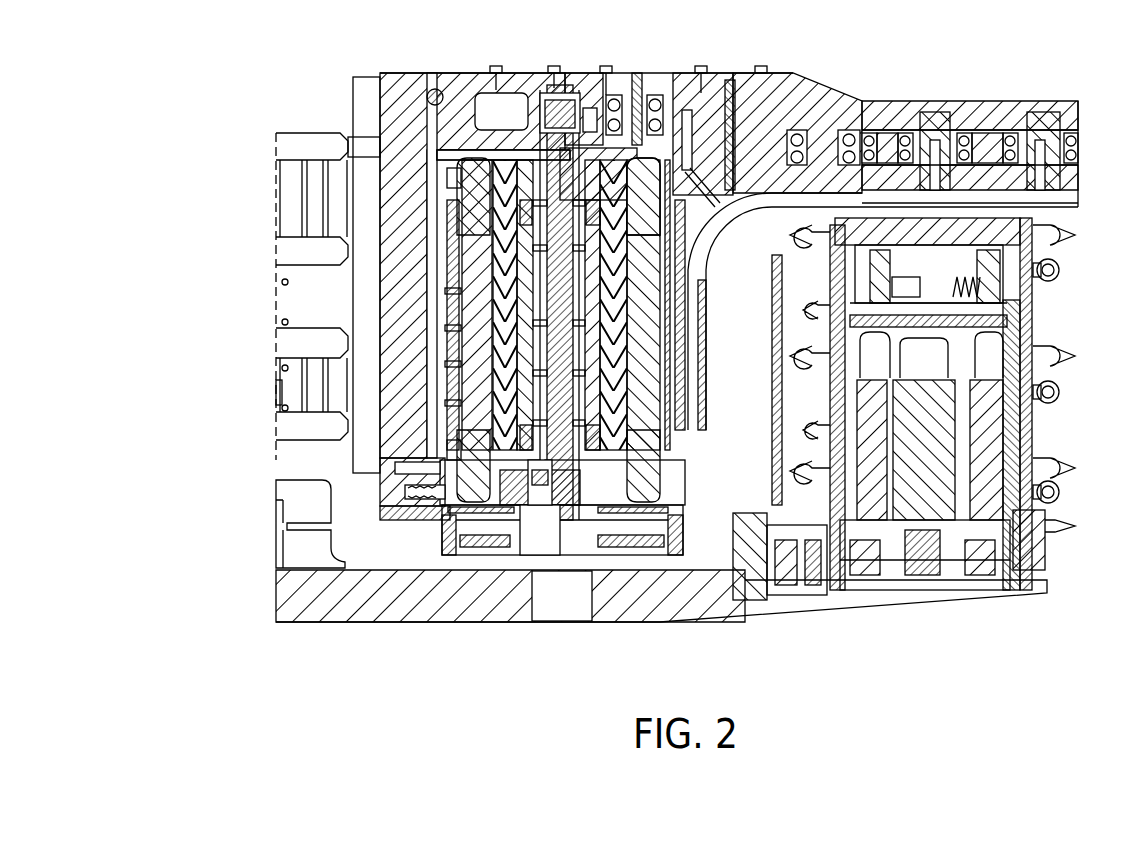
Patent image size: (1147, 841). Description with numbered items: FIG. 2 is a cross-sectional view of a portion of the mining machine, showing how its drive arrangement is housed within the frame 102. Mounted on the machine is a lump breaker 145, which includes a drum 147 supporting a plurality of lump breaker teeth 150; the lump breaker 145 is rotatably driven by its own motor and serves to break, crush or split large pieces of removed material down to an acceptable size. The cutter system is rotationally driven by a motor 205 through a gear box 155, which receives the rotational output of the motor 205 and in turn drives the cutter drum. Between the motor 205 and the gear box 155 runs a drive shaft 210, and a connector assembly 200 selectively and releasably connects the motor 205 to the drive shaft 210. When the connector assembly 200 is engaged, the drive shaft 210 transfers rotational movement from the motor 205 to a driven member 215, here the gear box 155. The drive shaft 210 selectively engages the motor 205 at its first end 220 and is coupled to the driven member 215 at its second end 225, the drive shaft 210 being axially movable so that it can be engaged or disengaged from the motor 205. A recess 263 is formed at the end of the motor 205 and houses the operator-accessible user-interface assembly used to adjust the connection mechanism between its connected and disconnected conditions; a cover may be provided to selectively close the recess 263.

The frame 102 is at (248, 348).
The lump breaker 145 is at (928, 605).
The drum 147 is at (826, 405).
The lump breaker teeth 150 is at (795, 368).
The gear box 155 is at (892, 80).
The connector assembly 200 is at (515, 505).
The motor 205 is at (462, 462).
The drive shaft 210 is at (555, 197).
The driven member 215 is at (592, 100).
The first end 220 is at (553, 428).
The second end 225 is at (520, 92).
The recess 263 is at (556, 540).